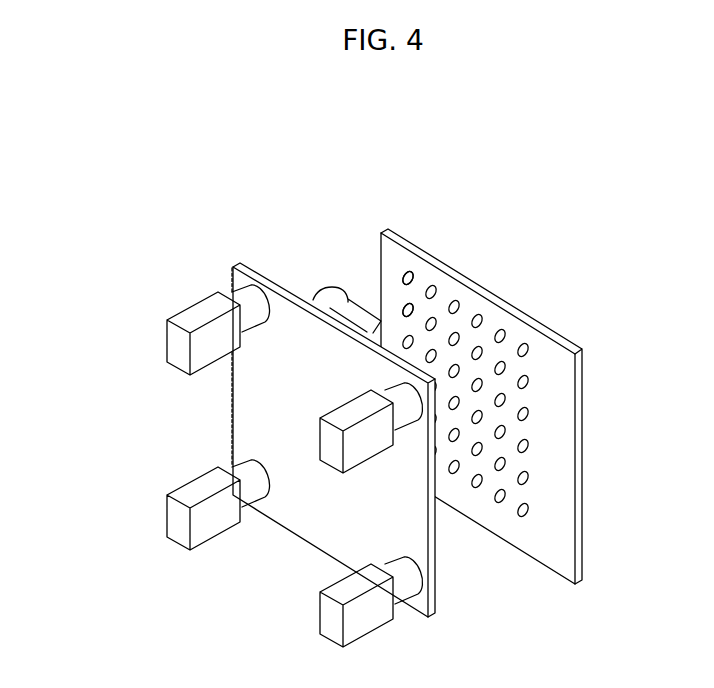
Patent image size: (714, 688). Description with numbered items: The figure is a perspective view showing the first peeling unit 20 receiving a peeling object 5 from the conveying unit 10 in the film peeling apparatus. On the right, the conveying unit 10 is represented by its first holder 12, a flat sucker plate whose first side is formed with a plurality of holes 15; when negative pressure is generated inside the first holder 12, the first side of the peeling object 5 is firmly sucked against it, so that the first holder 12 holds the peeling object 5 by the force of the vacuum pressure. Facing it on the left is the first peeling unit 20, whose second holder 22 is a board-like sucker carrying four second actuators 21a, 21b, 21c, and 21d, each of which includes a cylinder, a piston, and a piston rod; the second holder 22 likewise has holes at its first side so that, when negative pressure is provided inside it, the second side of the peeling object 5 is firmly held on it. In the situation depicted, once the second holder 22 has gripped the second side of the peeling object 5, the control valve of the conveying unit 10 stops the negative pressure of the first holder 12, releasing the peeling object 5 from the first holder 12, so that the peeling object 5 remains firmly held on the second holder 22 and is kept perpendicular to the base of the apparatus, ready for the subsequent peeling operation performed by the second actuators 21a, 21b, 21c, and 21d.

The peeling object 5 is at (274, 274).
The conveying unit 10 is at (513, 397).
The first holder 12 is at (560, 487).
The holes 15 is at (529, 446).
The first peeling unit 20 is at (268, 432).
The second actuator 21a is at (366, 470).
The second actuator 21b is at (196, 302).
The second actuator 21c is at (316, 611).
The second actuator 21d is at (164, 515).
The second holder 22 is at (248, 398).